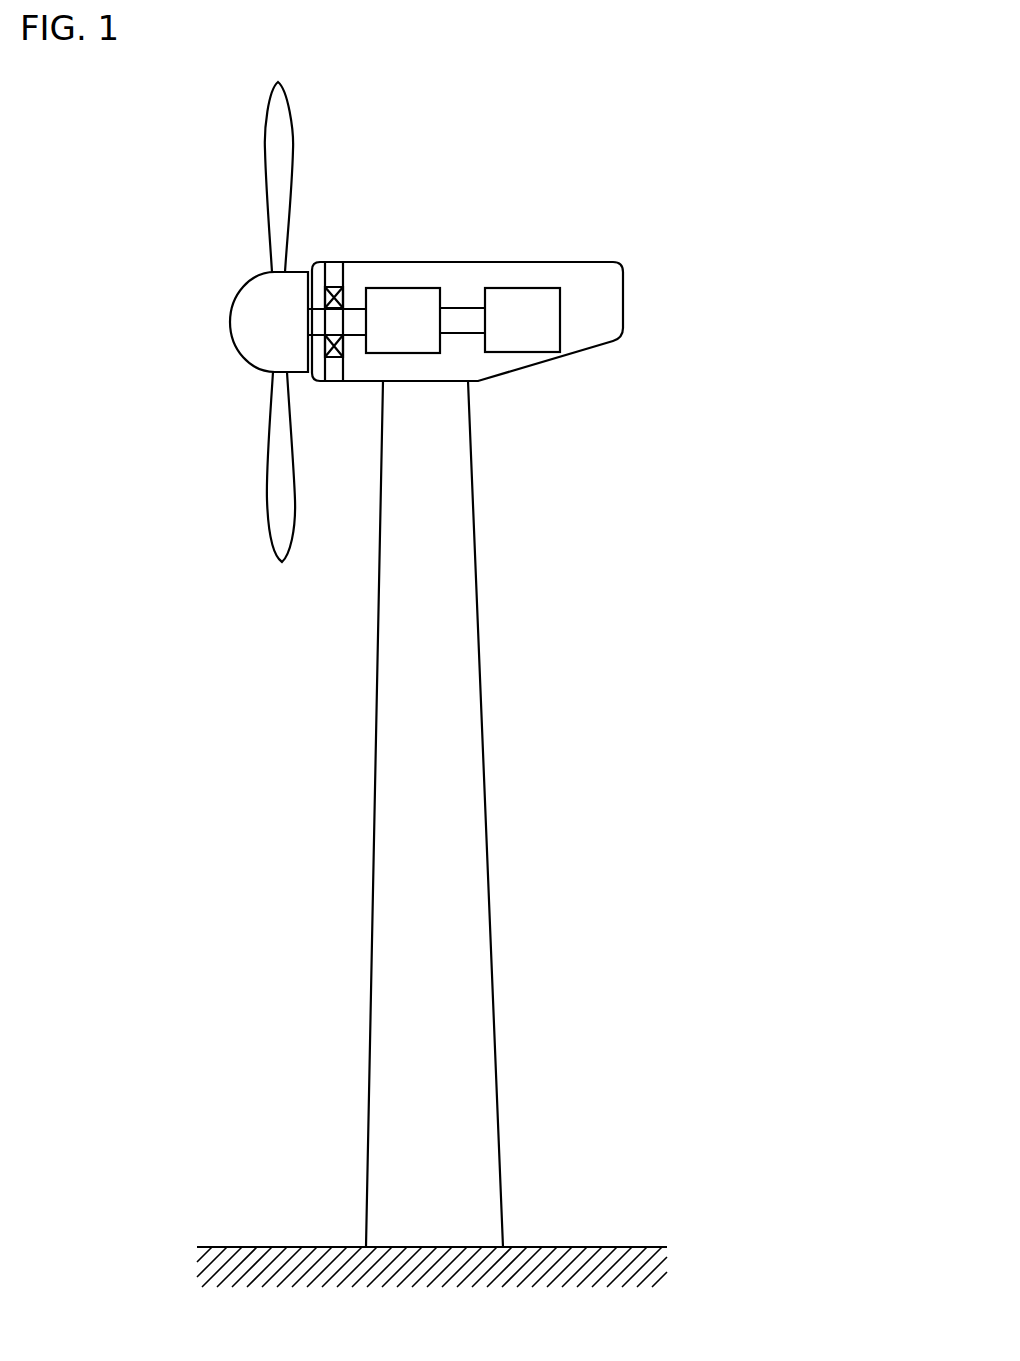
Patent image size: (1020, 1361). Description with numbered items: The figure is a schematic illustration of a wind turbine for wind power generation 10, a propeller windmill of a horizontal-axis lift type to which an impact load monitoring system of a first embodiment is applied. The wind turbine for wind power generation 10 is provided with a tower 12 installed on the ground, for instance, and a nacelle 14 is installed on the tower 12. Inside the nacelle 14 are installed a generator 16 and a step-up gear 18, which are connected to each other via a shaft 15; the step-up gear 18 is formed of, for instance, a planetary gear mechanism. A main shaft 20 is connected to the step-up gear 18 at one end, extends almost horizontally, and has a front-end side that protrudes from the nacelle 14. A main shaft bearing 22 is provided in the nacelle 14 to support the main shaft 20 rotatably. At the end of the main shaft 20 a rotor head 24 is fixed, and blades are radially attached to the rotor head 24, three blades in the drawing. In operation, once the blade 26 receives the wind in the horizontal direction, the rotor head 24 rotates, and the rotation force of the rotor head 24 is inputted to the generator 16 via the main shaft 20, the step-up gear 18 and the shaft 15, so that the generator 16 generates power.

The wind turbine for wind power generation 10 is at (558, 188).
The tower 12 is at (468, 780).
The nacelle 14 is at (573, 260).
The shaft 15 is at (465, 310).
The generator 16 is at (518, 302).
The step-up gear 18 is at (395, 302).
The main shaft 20 is at (358, 318).
The main shaft bearing 22 is at (344, 292).
The rotor head 24 is at (241, 355).
The blade 26 is at (265, 152).